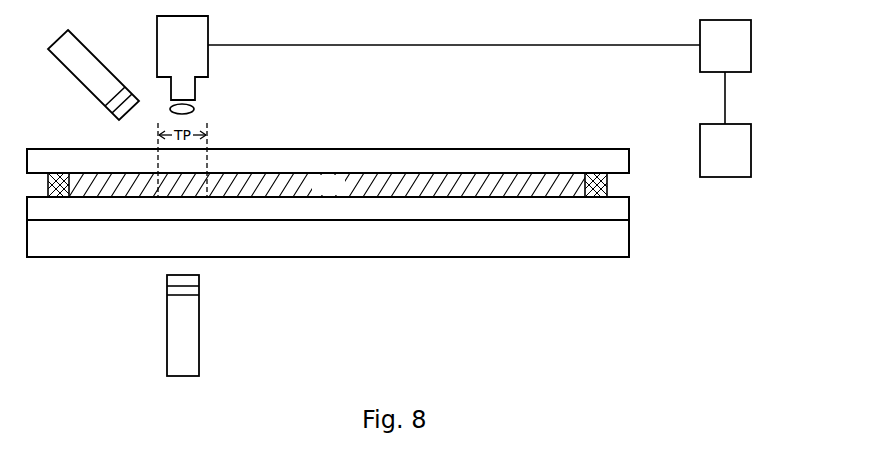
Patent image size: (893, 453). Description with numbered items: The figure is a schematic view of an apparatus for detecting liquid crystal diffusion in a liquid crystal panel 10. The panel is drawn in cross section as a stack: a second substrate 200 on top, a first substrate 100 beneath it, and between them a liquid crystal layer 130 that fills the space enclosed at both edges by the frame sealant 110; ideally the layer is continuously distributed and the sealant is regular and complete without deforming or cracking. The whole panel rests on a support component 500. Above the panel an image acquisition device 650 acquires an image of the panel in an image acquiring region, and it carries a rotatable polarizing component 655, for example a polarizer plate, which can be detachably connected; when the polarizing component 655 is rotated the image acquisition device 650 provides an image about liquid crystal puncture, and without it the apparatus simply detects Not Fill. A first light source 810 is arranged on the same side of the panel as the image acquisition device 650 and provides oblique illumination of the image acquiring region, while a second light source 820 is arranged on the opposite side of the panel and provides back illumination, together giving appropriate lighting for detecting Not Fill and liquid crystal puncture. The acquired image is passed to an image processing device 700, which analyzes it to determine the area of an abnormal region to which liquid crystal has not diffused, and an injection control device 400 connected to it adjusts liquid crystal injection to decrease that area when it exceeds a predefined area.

The liquid crystal panel 10 is at (655, 122).
The first substrate 100 is at (328, 208).
The frame sealant 110 is at (607, 186).
The liquid crystal layer 130 is at (328, 185).
The second substrate 200 is at (328, 161).
The injection control device 400 is at (725, 150).
The support component 500 is at (328, 238).
The image acquisition device 650 is at (428, 58).
The polarizing component 655 is at (194, 111).
The image processing device 700 is at (725, 72).
The first light source 810 is at (93, 76).
The second light source 820 is at (181, 326).